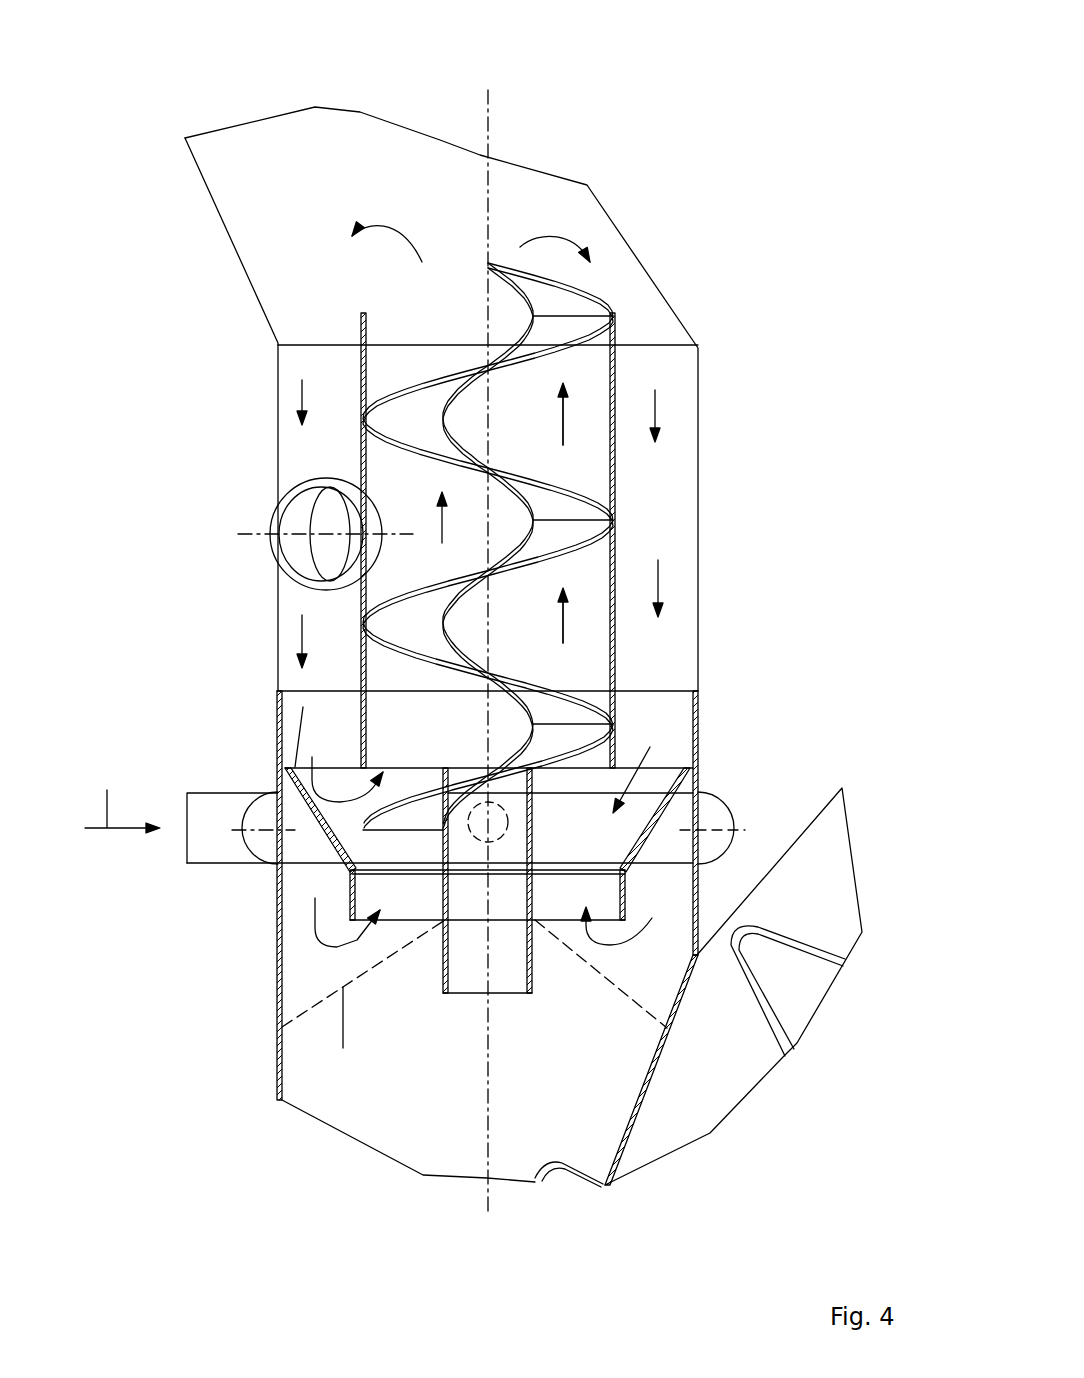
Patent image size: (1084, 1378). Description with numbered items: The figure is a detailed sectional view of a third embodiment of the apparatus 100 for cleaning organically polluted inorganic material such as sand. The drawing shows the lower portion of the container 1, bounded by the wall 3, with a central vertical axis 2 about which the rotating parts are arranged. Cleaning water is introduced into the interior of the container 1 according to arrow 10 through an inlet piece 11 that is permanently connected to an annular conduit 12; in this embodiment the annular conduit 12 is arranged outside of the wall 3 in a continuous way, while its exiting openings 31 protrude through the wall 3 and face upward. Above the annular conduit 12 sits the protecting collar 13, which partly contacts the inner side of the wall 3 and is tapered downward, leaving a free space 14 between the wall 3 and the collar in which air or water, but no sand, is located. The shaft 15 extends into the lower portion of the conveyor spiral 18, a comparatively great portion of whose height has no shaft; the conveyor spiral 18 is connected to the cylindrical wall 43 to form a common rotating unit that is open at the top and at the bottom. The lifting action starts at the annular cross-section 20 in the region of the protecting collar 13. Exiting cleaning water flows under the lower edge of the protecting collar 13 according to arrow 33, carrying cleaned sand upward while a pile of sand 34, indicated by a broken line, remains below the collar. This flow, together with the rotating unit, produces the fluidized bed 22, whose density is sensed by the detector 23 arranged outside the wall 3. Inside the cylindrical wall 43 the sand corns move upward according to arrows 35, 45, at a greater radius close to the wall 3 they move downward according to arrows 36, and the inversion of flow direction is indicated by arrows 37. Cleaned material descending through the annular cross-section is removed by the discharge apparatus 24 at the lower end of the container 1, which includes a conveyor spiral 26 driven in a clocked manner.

The apparatus 100 is at (130, 120).
The container 1 is at (616, 134).
The longitudinal axis 2 is at (490, 128).
The wall 3 is at (700, 540).
The arrow 10 is at (181, 800).
The inlet piece 11 is at (205, 830).
The annular conduit 12 is at (700, 823).
The protecting collar 13 is at (303, 707).
The free space 14 is at (277, 793).
The shaft 15 is at (532, 977).
The conveyor spiral 18 is at (614, 545).
The annular cross-section 20 is at (613, 540).
The fluidized bed 22 is at (570, 662).
The detector 23 is at (288, 514).
The discharge apparatus 24 is at (780, 1098).
The conveyor spiral 26 is at (783, 980).
The exiting openings 31 is at (292, 812).
The arrow 33 is at (915, 885).
The pile of sand 34 is at (355, 1075).
The arrows 35 is at (565, 412).
The arrows 36 is at (278, 388).
The arrows 37 is at (379, 225).
The cylindrical wall 43 is at (738, 540).
The arrows 45 is at (565, 412).